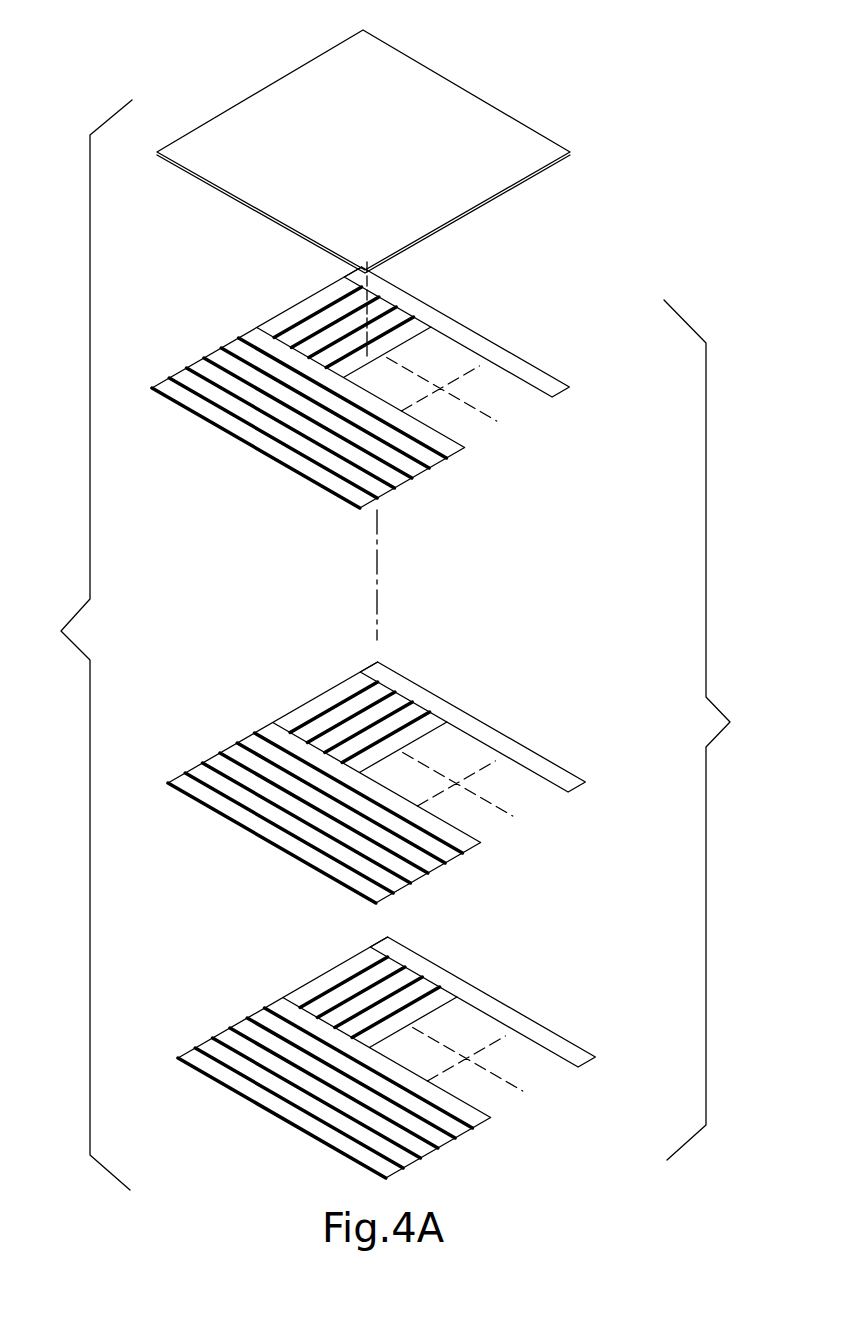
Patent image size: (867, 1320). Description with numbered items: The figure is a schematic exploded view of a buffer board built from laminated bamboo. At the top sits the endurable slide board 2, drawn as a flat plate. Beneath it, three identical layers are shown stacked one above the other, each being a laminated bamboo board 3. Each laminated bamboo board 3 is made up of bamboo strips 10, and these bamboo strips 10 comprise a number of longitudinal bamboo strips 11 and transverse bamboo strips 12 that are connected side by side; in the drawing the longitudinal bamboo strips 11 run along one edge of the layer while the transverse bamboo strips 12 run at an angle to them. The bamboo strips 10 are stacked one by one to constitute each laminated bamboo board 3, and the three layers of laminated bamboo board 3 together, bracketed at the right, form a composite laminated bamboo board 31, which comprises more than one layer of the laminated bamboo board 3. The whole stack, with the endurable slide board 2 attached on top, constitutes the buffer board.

The endurable slide board 2 is at (412, 97).
The laminated bamboo board 3 is at (403, 715).
The bamboo strips 10 is at (513, 667).
The longitudinal bamboo strips 11 is at (287, 646).
The transverse bamboo strips 12 is at (294, 758).
The composite laminated bamboo board 31 is at (717, 730).